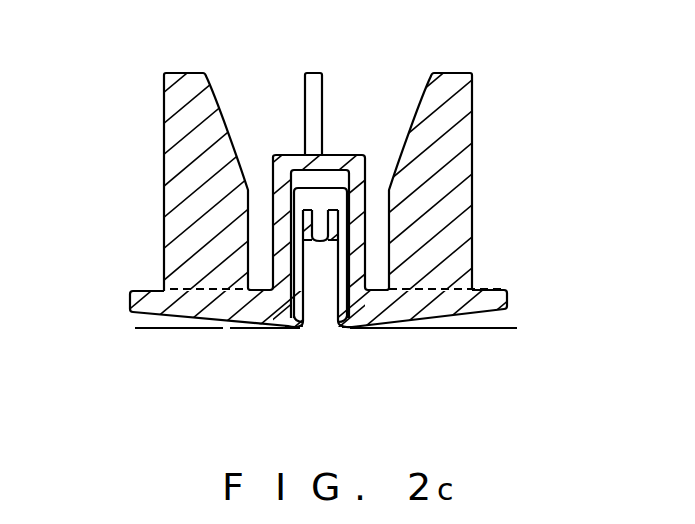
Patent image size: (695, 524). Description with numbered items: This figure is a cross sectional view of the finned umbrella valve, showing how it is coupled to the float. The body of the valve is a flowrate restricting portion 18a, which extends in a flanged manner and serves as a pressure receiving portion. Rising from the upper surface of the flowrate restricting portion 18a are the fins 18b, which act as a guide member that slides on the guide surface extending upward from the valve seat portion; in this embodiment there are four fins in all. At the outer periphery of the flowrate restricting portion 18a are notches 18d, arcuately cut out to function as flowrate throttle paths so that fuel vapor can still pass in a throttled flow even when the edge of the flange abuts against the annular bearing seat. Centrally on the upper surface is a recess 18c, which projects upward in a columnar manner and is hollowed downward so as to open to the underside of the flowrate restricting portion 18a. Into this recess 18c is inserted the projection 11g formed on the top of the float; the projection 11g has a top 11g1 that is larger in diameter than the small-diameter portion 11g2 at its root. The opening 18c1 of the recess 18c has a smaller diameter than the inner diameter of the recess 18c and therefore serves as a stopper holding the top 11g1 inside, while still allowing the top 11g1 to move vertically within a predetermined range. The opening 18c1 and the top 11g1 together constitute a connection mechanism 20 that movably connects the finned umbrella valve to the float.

The flowrate restricting portion 18a is at (505, 301).
The fins 18b is at (465, 118).
The recess 18c is at (347, 152).
The opening 18c1 is at (347, 322).
The notches 18d is at (132, 298).
The projection 11g is at (478, 237).
The top 11g1 is at (333, 197).
The small-diameter portion 11g2 is at (326, 249).
The connection mechanism 20 is at (291, 342).